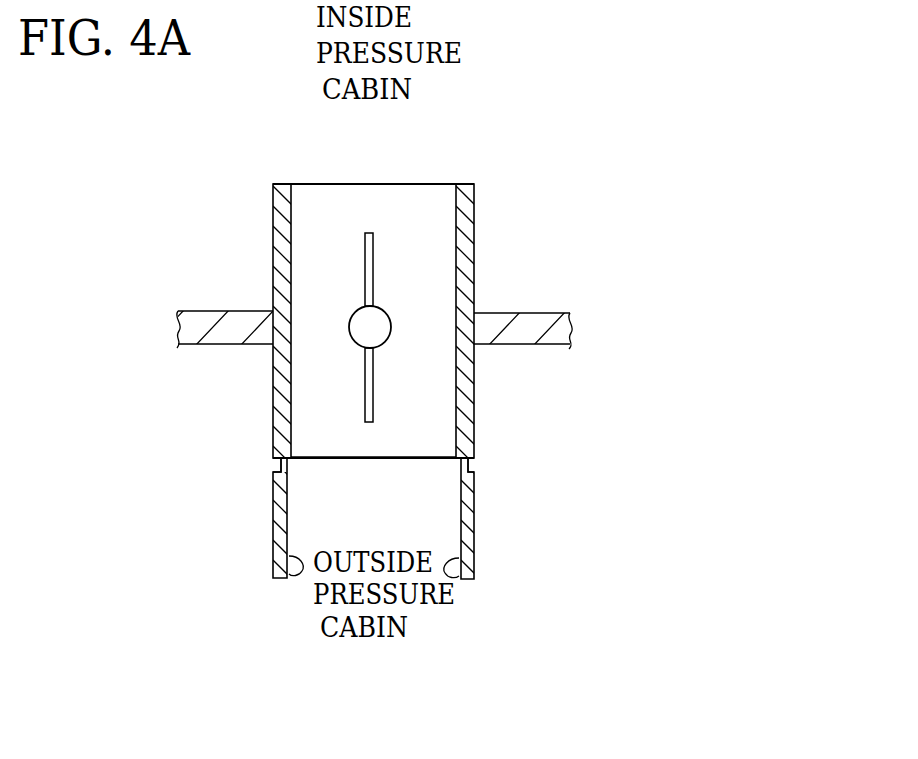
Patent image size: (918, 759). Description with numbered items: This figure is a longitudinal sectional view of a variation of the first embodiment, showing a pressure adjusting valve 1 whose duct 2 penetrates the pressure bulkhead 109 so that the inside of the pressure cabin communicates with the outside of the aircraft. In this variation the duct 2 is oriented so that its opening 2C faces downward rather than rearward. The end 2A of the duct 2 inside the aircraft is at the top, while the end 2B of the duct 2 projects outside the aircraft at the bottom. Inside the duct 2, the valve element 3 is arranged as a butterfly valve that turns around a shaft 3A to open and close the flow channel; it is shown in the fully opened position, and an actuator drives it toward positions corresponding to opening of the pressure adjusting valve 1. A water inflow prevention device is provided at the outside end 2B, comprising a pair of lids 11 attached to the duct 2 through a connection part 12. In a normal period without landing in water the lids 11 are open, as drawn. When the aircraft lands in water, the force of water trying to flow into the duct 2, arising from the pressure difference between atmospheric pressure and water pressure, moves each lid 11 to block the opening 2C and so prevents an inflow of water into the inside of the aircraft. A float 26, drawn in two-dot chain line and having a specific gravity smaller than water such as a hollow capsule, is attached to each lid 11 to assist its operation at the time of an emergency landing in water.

The pressure adjusting valve 1 is at (244, 209).
The duct 2 is at (474, 245).
The end of duct inside the aircraft 2A is at (474, 195).
The end of duct projecting outside the aircraft 2B is at (474, 455).
The opening of duct 2C is at (346, 459).
The valve element 3 is at (374, 249).
The shaft 3A is at (382, 348).
The lid 11 is at (275, 532).
The connection part 12 is at (276, 463).
The float 26 is at (295, 580).
The pressure bulkhead 109 is at (536, 310).